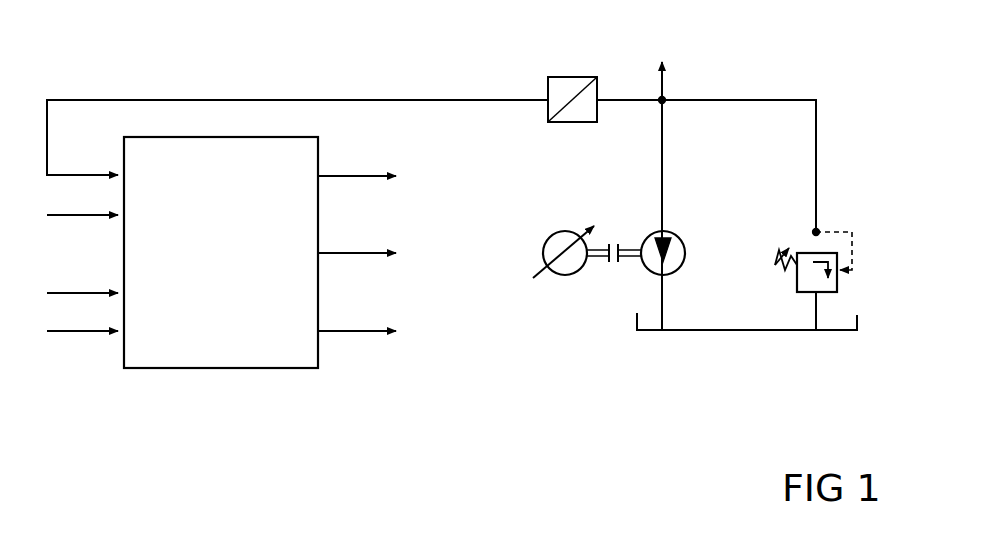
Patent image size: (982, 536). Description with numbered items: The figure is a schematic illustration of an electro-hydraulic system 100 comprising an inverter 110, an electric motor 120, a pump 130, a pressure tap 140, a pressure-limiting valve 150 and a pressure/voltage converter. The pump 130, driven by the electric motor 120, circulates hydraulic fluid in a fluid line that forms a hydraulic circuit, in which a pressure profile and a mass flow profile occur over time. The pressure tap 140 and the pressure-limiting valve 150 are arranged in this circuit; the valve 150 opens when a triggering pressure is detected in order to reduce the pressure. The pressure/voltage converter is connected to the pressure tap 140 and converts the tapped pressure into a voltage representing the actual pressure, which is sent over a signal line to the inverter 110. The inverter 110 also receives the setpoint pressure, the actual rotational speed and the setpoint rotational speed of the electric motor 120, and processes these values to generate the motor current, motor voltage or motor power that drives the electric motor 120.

The electro-hydraulic system 100 is at (165, 50).
The inverter 110 is at (220, 368).
The electric motor 120 is at (568, 278).
The pump 130 is at (668, 232).
The pressure tap 140 is at (660, 98).
The pressure-limiting valve 150 is at (797, 287).